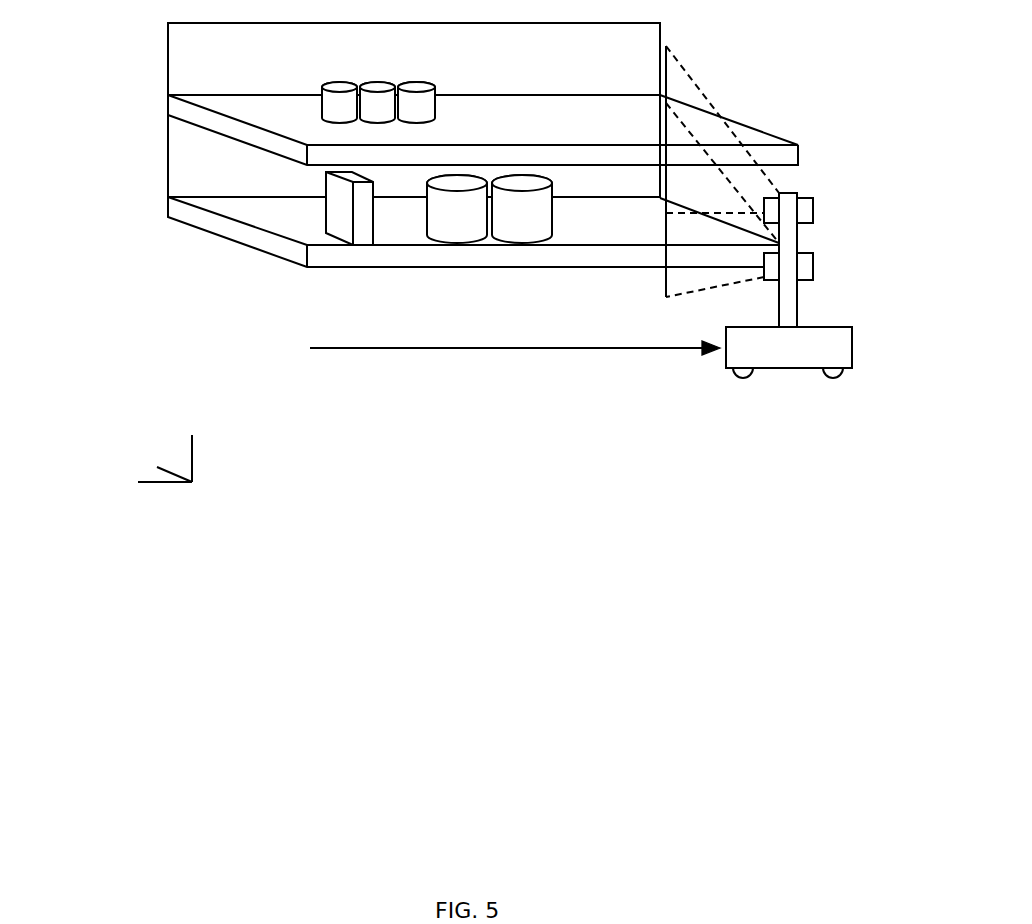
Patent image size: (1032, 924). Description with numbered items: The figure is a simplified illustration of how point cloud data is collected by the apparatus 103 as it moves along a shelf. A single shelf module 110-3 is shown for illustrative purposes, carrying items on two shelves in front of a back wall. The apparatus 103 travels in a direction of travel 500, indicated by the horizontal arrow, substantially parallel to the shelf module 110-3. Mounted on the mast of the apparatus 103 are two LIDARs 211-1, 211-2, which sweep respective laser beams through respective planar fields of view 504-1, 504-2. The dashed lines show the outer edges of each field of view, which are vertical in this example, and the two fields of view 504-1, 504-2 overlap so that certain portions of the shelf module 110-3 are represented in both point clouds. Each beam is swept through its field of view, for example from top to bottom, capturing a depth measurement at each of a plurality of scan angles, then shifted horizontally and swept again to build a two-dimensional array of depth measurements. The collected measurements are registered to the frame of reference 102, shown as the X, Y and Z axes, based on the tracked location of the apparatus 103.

The shelf module 110-3 is at (128, 188).
The apparatus 103 is at (743, 382).
The LIDAR 211-1 is at (813, 213).
The LIDAR 211-2 is at (813, 267).
The field of view 504-1 is at (707, 93).
The field of view 504-2 is at (667, 288).
The direction of travel 500 is at (453, 348).
The frame of reference 102 is at (197, 493).